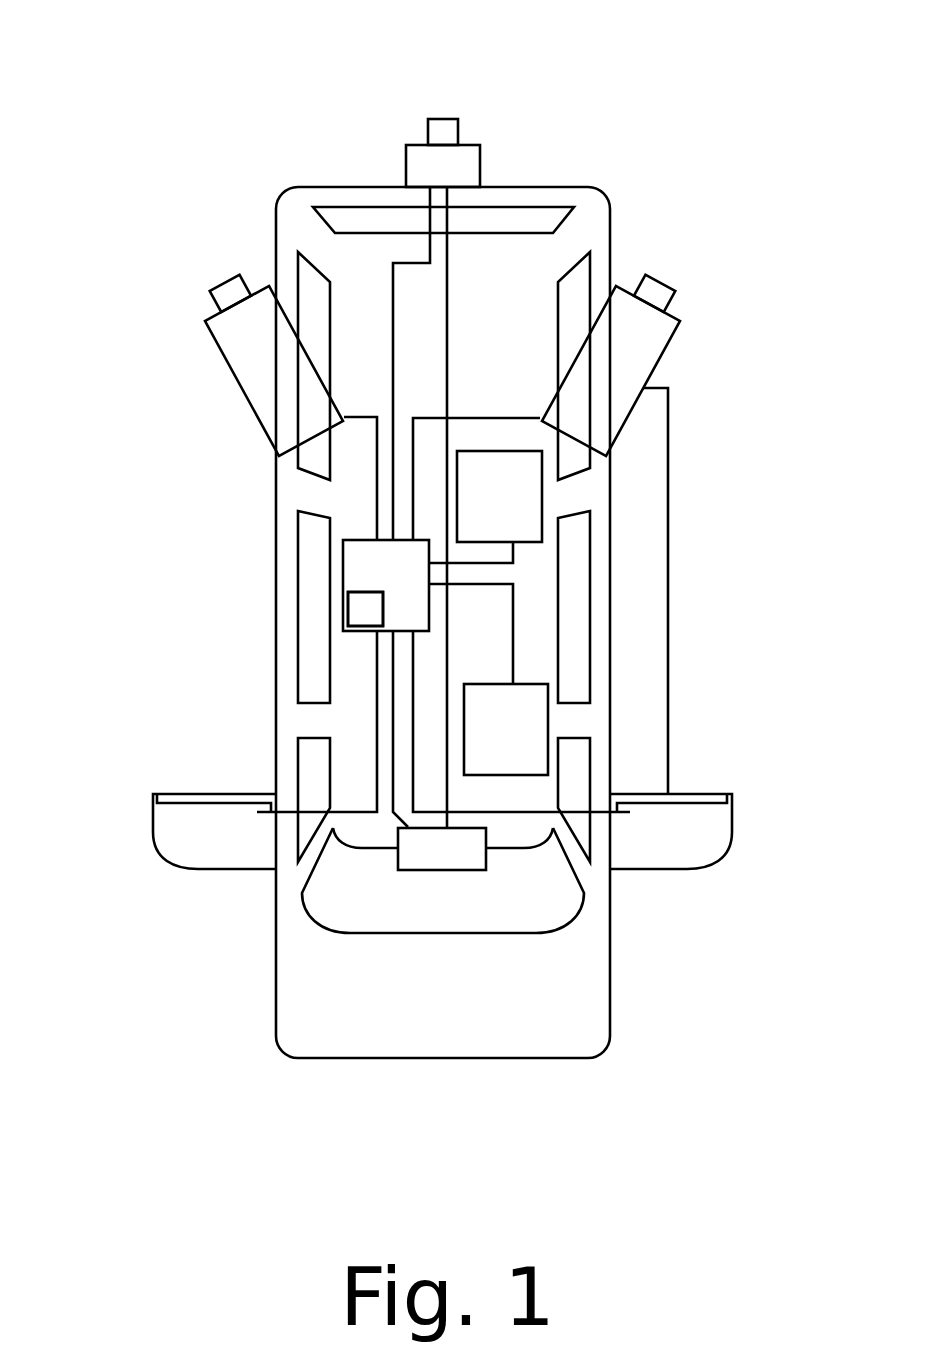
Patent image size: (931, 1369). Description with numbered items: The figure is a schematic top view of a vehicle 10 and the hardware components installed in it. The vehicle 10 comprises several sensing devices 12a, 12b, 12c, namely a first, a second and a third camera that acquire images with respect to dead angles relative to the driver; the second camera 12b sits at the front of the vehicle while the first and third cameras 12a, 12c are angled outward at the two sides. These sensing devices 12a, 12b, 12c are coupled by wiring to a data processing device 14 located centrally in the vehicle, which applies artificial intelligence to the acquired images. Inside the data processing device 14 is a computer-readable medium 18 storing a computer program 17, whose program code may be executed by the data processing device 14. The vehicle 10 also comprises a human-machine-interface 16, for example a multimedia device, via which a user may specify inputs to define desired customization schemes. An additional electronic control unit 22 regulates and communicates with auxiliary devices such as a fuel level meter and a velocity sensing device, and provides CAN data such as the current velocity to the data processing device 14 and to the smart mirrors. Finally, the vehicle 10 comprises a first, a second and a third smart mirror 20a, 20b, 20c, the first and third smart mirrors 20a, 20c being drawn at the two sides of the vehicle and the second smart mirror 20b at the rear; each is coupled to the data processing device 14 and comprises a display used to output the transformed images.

The vehicle 10 is at (597, 187).
The sensing device 12a is at (207, 320).
The sensing device 12b is at (468, 146).
The sensing device 12c is at (676, 318).
The data processing device 14 is at (343, 553).
The human-machine-interface 16 is at (548, 722).
The computer program 17 is at (368, 592).
The computer-readable medium 18 is at (251, 640).
The smart mirror 20a is at (183, 868).
The smart mirror 20b is at (423, 871).
The smart mirror 20c is at (703, 868).
The electronic control unit 22 is at (542, 500).